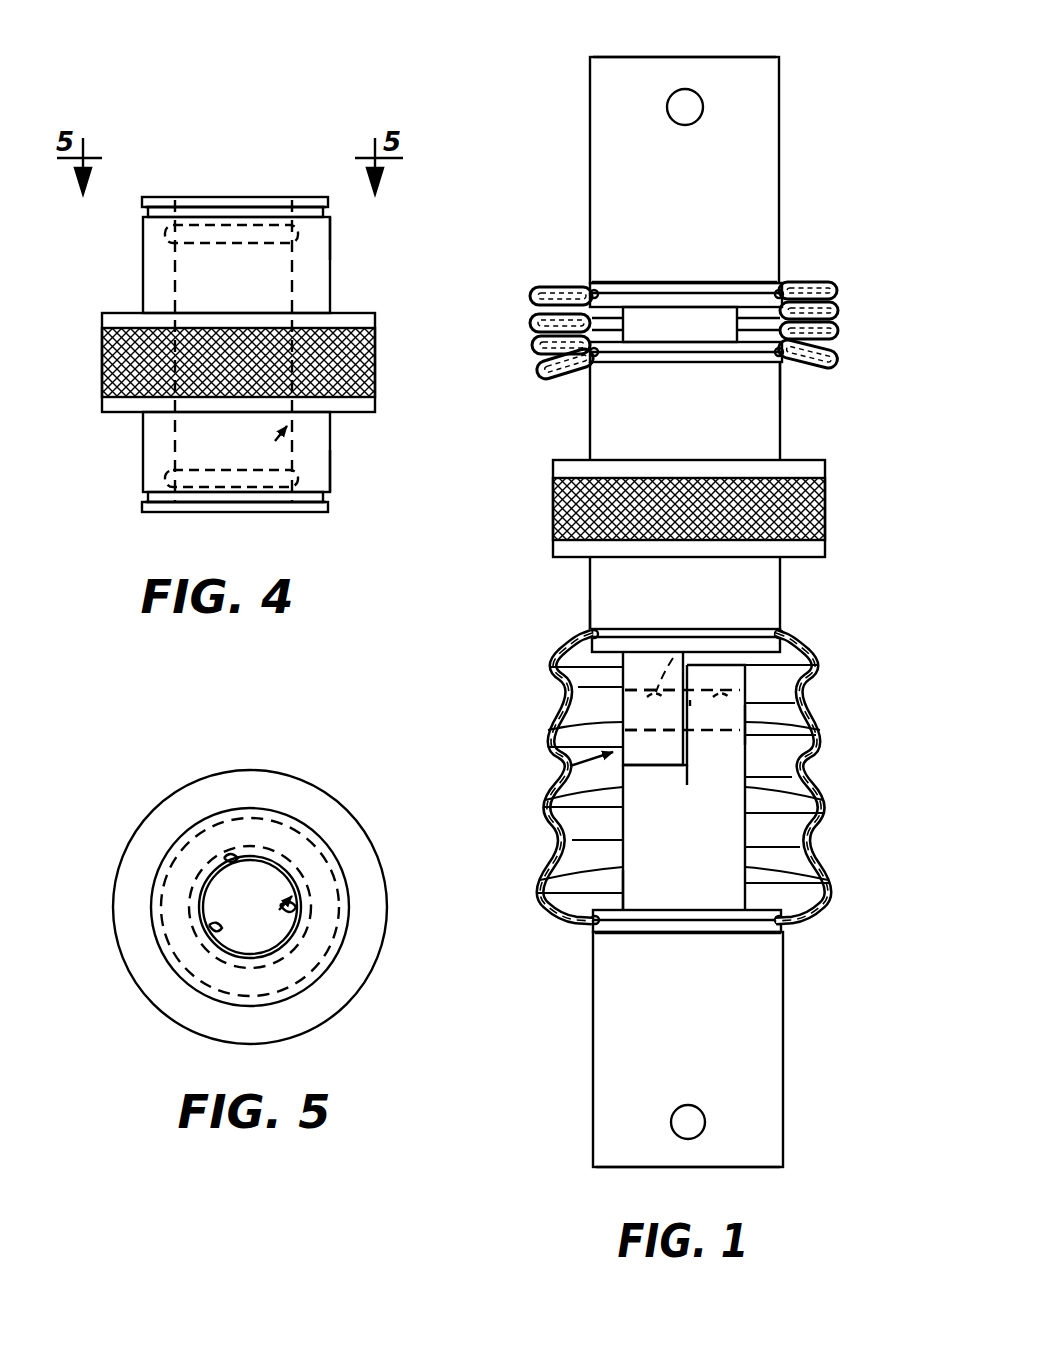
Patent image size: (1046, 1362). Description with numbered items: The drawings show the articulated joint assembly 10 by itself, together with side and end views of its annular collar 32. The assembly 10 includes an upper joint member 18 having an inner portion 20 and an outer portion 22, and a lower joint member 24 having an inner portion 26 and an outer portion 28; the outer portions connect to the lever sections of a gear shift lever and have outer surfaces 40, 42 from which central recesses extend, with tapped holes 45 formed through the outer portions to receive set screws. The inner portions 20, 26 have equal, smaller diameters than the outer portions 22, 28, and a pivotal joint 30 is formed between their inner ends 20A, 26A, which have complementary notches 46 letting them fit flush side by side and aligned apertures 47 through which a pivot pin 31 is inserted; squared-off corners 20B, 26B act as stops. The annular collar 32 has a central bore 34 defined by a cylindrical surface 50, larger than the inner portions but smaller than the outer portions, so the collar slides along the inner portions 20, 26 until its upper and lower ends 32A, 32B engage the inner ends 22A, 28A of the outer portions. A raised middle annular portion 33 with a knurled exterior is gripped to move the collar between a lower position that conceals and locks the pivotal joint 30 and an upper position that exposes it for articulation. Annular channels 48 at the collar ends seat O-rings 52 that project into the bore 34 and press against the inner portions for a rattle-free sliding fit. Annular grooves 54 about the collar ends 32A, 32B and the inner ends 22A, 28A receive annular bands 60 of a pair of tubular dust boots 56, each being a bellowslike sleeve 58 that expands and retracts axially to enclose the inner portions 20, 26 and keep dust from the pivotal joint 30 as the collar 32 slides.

In FIG. 1, the articulated joint assembly 10 is at (526, 77).
In FIG. 1, the upper joint member 18 is at (783, 148).
In FIG. 1, the inner portion of the upper joint member 20 is at (706, 323).
In FIG. 1, the inner end of the inner portion of the upper joint member 20A is at (622, 731).
In FIG. 1, the squared-off corner 20B is at (622, 656).
In FIG. 1, the outer portion of the upper joint member 22 is at (590, 205).
In FIG. 1, the inner end of the outer portion of the upper joint member 22A is at (594, 285).
In FIG. 1, the lower joint member 24 is at (590, 1017).
In FIG. 1, the inner portion of the lower joint member 26 is at (681, 787).
In FIG. 1, the inner end of the inner portion of the lower joint member 26A is at (746, 722).
In FIG. 1, the squared-off corner 26B is at (542, 880).
In FIG. 1, the outer portion of the lower joint member 28 is at (785, 1022).
In FIG. 1, the inner end of the outer portion of the lower joint member 28A is at (600, 948).
In FIG. 1, the pivotal joint 30 is at (572, 768).
In FIG. 1, the pivot pin 31 is at (697, 708).
In FIG. 1, the annular collar 32 is at (589, 414).
In FIG. 4, the annular collar 32 is at (310, 148).
In FIG. 5, the annular collar 32 is at (264, 768).
In FIG. 1, the upper end of the annular collar 32A is at (782, 386).
In FIG. 4, the upper end of the annular collar 32A is at (330, 238).
In FIG. 1, the lower end of the annular collar 32B is at (600, 608).
In FIG. 4, the lower end of the annular collar 32B is at (330, 485).
In FIG. 1, the raised middle annular portion 33 is at (554, 541).
In FIG. 4, the raised middle annular portion 33 is at (102, 405).
In FIG. 5, the raised middle annular portion 33 is at (153, 810).
In FIG. 4, the central bore 34 is at (273, 448).
In FIG. 5, the central bore 34 is at (299, 916).
In FIG. 1, the outer surface of the upper outer portion 40 is at (636, 57).
In FIG. 1, the outer surface of the lower outer portion 42 is at (612, 1170).
In FIG. 1, the tapped holes 45 is at (676, 122).
In FIG. 1, the notches 46 is at (690, 757).
In FIG. 1, the apertures 47 is at (722, 692).
In FIG. 4, the annular channels 48 is at (167, 243).
In FIG. 5, the annular channels 48 is at (190, 897).
In FIG. 4, the cylindrical surface 50 is at (200, 217).
In FIG. 5, the cylindrical surface 50 is at (240, 862).
In FIG. 4, the O-rings 52 is at (278, 226).
In FIG. 5, the O-rings 52 is at (214, 938).
In FIG. 1, the annular grooves 54 is at (672, 293).
In FIG. 4, the annular grooves 54 is at (251, 214).
In FIG. 5, the annular grooves 54 is at (304, 982).
In FIG. 1, the tubular dust boots 56 is at (824, 287).
In FIG. 1, the bellowslike sleeve 58 is at (534, 350).
In FIG. 1, the annular bands 60 is at (601, 297).